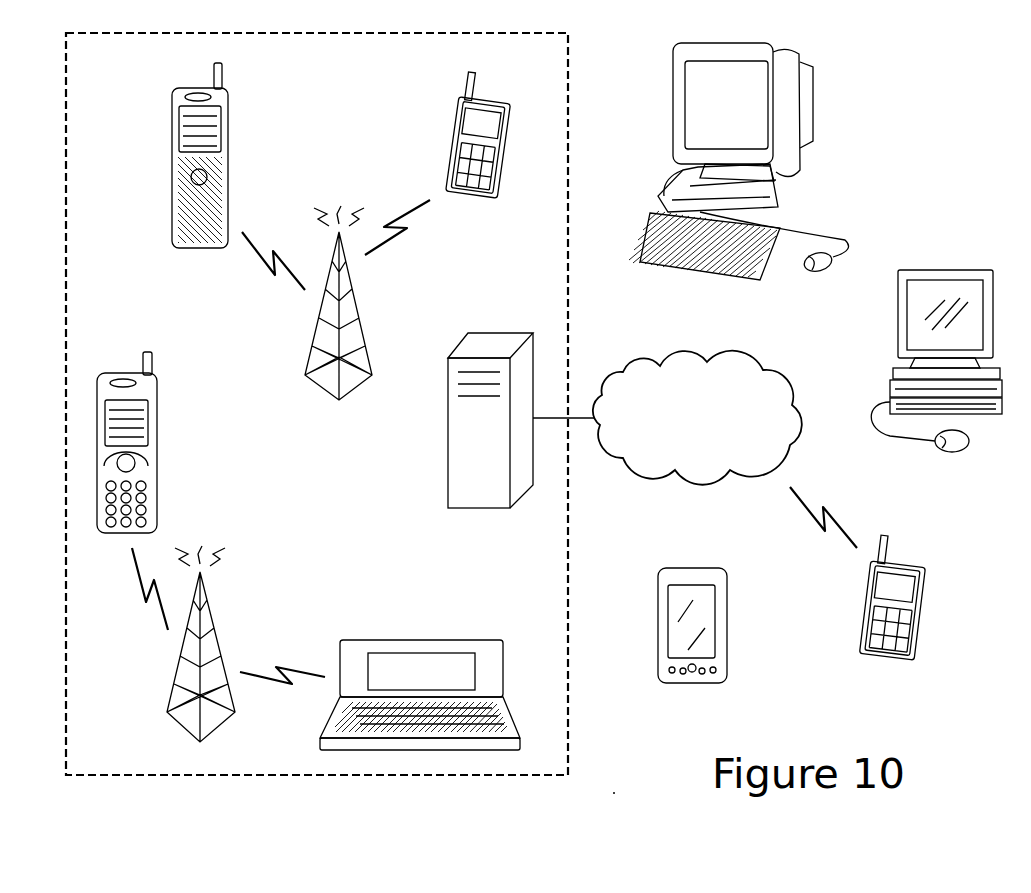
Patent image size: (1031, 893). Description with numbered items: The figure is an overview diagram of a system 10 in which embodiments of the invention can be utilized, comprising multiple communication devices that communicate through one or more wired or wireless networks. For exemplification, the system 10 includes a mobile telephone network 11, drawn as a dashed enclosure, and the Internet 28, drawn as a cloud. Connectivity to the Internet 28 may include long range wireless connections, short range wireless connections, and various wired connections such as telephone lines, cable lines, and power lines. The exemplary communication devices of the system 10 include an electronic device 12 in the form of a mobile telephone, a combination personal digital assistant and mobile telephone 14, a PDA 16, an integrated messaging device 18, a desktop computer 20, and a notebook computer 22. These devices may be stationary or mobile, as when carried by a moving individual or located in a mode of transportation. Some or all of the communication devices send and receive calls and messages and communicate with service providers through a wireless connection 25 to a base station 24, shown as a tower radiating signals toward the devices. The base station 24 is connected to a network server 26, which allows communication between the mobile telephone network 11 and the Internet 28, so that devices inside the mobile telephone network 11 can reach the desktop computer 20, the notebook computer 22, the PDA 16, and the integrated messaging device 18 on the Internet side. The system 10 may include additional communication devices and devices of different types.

The system 10 is at (990, 523).
The mobile telephone network 11 is at (108, 73).
The electronic device 12 is at (228, 166).
The combination personal digital assistant and mobile telephone 14 is at (418, 641).
The PDA 16 is at (727, 622).
The integrated messaging device 18 is at (451, 146).
The desktop computer 20 is at (813, 97).
The notebook computer 22 is at (945, 270).
The base station 24 is at (349, 302).
The wireless connection 25 is at (151, 612).
The network server 26 is at (448, 433).
The Internet 28 is at (742, 352).